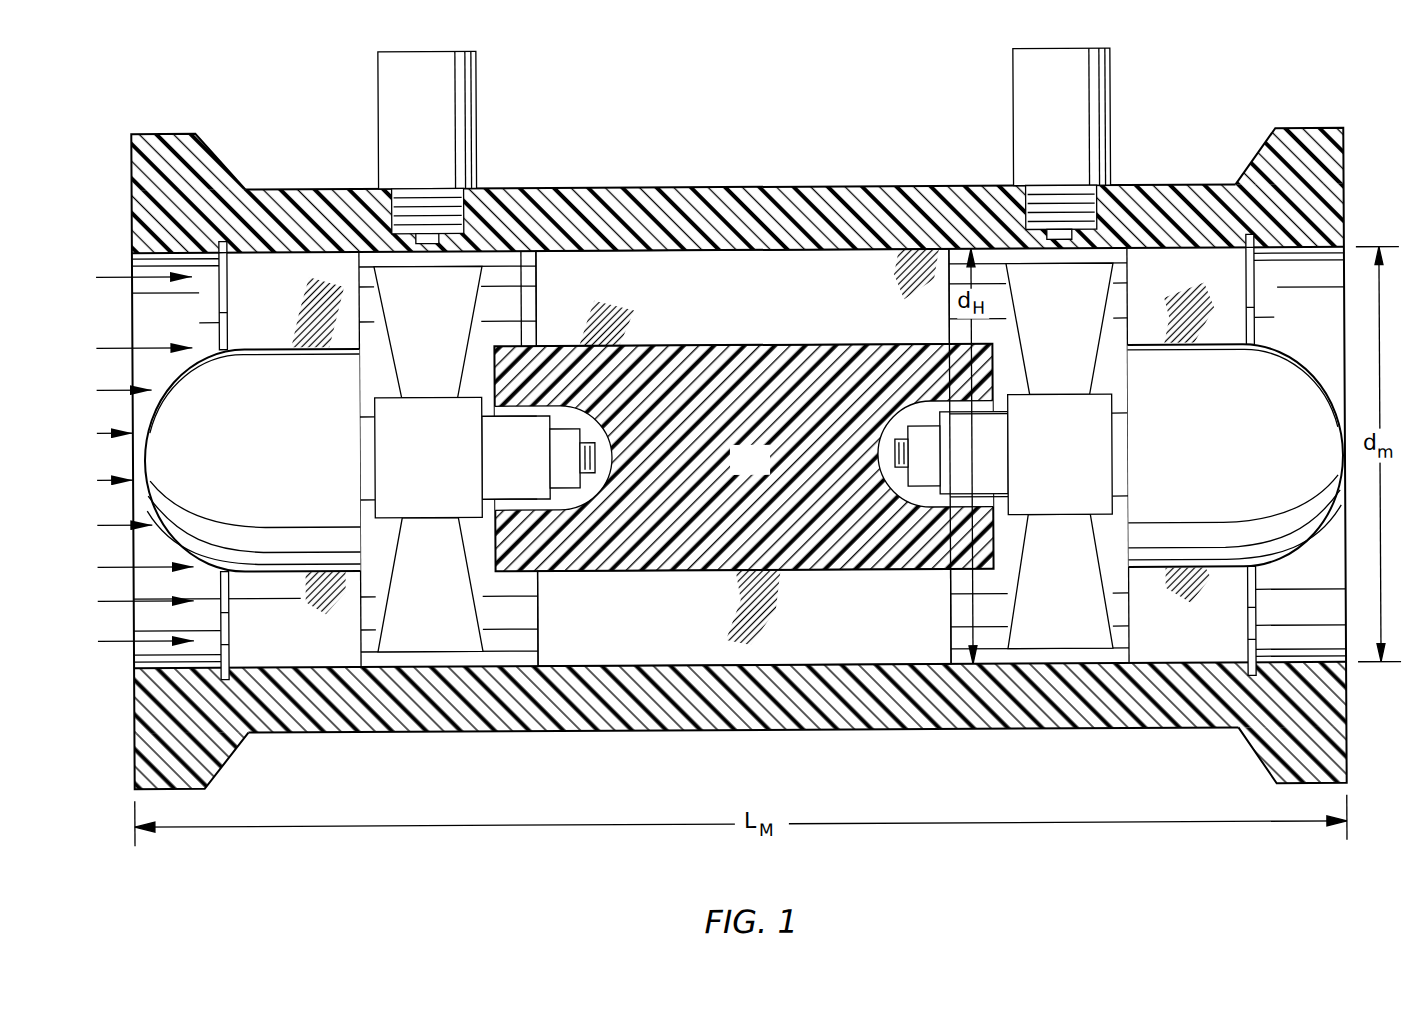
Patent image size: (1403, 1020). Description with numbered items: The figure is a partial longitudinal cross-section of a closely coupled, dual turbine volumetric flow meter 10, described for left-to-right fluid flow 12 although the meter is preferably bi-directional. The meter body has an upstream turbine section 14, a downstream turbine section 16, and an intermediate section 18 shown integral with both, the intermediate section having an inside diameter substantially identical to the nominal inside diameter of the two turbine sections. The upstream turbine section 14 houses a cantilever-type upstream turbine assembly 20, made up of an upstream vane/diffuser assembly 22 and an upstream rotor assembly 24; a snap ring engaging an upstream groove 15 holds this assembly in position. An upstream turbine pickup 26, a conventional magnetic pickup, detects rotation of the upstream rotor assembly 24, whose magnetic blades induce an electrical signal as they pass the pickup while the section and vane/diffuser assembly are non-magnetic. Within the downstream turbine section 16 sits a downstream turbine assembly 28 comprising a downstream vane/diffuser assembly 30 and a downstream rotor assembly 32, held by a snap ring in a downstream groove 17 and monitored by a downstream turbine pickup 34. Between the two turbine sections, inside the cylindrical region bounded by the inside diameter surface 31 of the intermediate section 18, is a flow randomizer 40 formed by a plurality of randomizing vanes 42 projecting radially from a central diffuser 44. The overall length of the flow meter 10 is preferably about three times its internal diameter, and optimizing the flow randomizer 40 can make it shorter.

The dual turbine volumetric flow meter 10 is at (889, 92).
The fluid flow 12 is at (91, 468).
The upstream turbine section 14 is at (347, 188).
The upstream groove 15 is at (225, 239).
The downstream turbine section 16 is at (1182, 187).
The downstream groove 17 is at (1248, 236).
The intermediate section 18 is at (672, 187).
The upstream turbine assembly 20 is at (203, 336).
The upstream vane/diffuser assembly 22 is at (251, 474).
The upstream rotor assembly 24 is at (414, 335).
The upstream turbine pickup 26 is at (414, 137).
The downstream turbine assembly 28 is at (1285, 328).
The downstream vane/diffuser assembly 30 is at (1199, 467).
The inside diameter surface 31 is at (523, 268).
The downstream rotor assembly 32 is at (1046, 335).
The downstream turbine pickup 34 is at (1048, 132).
The flow randomizer 40 is at (729, 311).
The randomizing vanes 42 is at (796, 316).
The central diffuser 44 is at (736, 470).